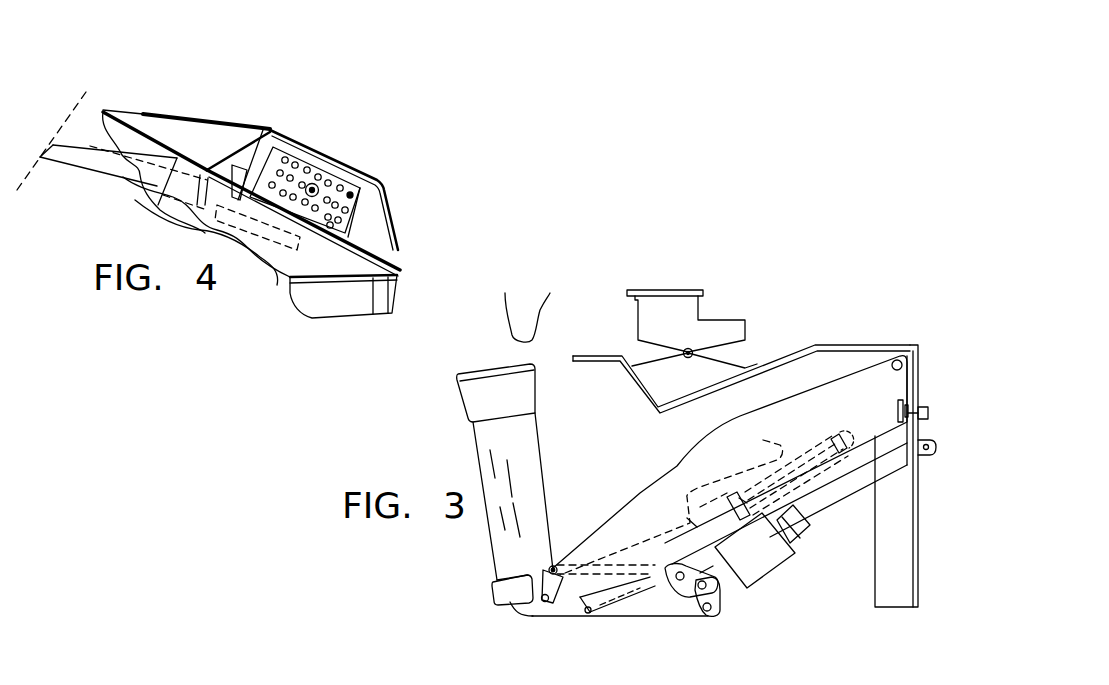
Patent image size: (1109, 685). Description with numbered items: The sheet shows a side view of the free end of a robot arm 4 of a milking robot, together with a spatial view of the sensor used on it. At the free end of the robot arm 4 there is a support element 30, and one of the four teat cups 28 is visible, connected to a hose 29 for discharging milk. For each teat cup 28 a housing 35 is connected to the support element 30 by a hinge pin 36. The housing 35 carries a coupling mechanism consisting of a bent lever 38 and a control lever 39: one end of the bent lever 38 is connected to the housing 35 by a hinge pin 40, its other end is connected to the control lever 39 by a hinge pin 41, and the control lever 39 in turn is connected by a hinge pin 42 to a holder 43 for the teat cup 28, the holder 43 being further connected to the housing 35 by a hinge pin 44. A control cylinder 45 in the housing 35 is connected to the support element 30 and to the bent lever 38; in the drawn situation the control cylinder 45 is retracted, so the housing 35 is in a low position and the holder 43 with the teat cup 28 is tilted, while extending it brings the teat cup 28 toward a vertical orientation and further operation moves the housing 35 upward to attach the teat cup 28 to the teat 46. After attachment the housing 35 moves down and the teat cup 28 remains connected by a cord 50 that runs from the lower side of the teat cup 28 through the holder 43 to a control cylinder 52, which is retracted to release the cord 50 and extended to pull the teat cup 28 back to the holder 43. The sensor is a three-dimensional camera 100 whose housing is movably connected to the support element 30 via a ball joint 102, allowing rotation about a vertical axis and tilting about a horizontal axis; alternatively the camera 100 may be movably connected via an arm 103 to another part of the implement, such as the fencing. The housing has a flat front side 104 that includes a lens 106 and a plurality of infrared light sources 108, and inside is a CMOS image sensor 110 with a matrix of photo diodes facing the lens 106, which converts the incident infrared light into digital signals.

In FIG. 3, the robot arm 4 is at (813, 263).
In FIG. 3, the teat cup 28 is at (515, 457).
In FIG. 3, the hose 29 is at (564, 551).
In FIG. 3, the support element 30 is at (913, 352).
In FIG. 3, the housing 35 is at (677, 468).
In FIG. 3, the hinge pin 36 is at (896, 360).
In FIG. 3, the bent lever 38 is at (705, 593).
In FIG. 3, the control lever 39 is at (652, 578).
In FIG. 3, the hinge pin 40 is at (707, 608).
In FIG. 3, the hinge pin 41 is at (678, 577).
In FIG. 3, the hinge pin 42 is at (585, 563).
In FIG. 3, the holder 43 is at (498, 587).
In FIG. 3, the hinge pin 44 is at (545, 598).
In FIG. 3, the control cylinder 45 is at (767, 560).
In FIG. 3, the teat 46 is at (528, 320).
In FIG. 3, the cord 50 is at (567, 608).
In FIG. 3, the control cylinder 52 is at (767, 458).
In FIG. 4, the 3D camera 100 is at (275, 105).
In FIG. 3, the 3D camera 100 is at (730, 306).
In FIG. 4, the ball joint 102 is at (275, 280).
In FIG. 3, the ball joint 102 is at (745, 367).
In FIG. 4, the arm 103 is at (107, 158).
In FIG. 4, the front side 104 is at (330, 225).
In FIG. 4, the lens 106 is at (318, 177).
In FIG. 4, the light sources 108 is at (285, 160).
In FIG. 4, the CMOS image sensor 110 is at (237, 167).